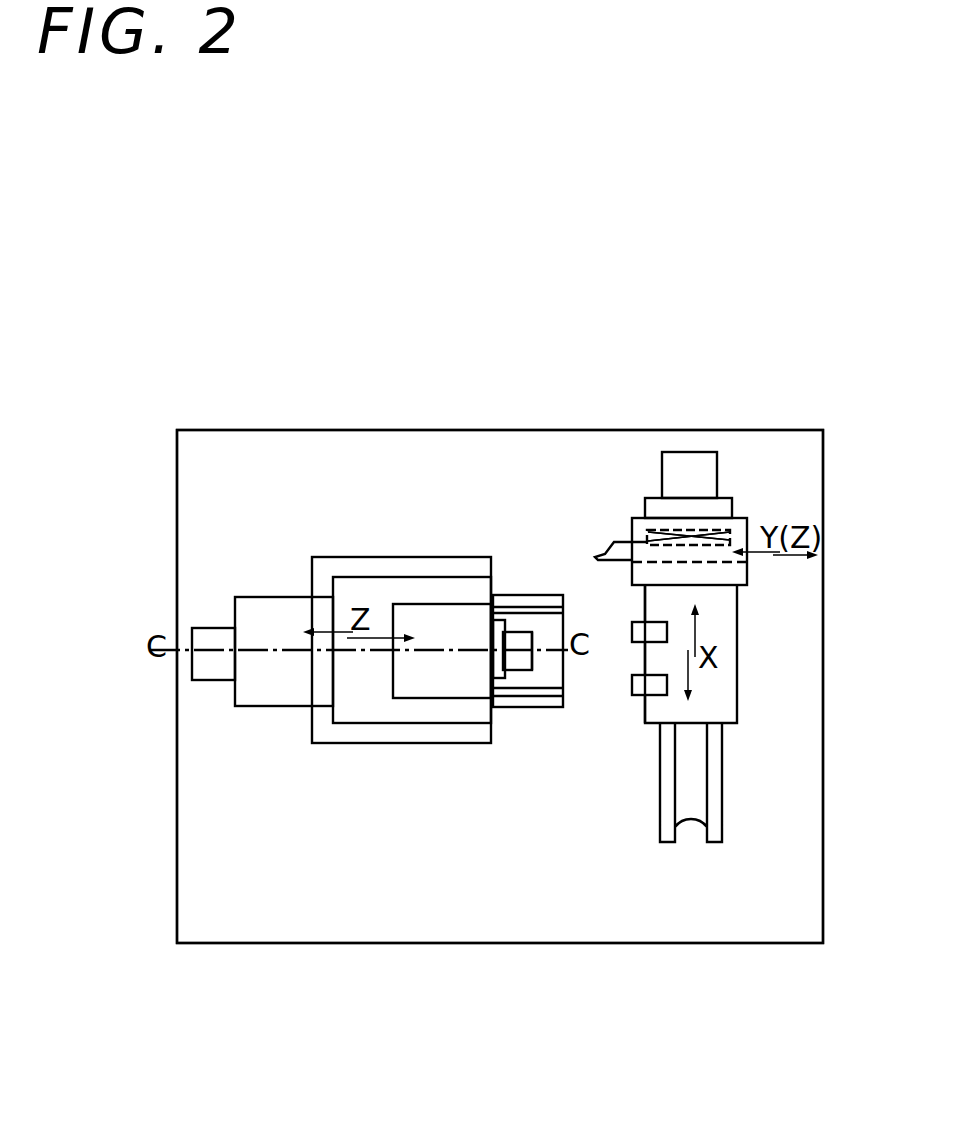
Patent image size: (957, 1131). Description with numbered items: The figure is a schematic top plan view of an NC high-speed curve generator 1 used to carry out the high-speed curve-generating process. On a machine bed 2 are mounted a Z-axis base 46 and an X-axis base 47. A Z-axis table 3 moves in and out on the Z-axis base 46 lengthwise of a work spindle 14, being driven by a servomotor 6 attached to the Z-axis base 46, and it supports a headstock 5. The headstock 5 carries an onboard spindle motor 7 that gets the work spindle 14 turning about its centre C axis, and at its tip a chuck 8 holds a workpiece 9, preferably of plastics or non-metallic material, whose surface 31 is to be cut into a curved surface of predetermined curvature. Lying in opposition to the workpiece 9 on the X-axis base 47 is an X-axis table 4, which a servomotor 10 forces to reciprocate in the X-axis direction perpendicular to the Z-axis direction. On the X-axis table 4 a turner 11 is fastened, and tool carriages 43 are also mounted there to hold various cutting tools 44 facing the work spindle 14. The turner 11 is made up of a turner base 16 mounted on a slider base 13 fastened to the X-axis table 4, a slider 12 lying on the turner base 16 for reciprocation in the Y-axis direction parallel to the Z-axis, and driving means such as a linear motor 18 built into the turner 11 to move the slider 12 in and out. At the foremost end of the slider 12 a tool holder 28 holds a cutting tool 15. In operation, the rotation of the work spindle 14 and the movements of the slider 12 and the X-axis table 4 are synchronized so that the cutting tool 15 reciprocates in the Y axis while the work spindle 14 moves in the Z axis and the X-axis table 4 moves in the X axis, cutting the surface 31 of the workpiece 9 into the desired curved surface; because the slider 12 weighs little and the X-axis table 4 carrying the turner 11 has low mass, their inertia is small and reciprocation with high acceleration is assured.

The high-speed curve generator 1 is at (356, 423).
The machine bed 2 is at (457, 478).
The Z-axis table 3 is at (402, 563).
The X-axis table 4 is at (720, 683).
The headstock 5 is at (362, 703).
The servomotor 6 is at (215, 670).
The spindle motor 7 is at (268, 610).
The chuck 8 is at (498, 628).
The workpiece 9 is at (517, 667).
The servomotor 10 is at (695, 463).
The turner 11 is at (736, 541).
The slider 12 is at (637, 515).
The slider base 13 is at (710, 582).
The work spindle 14 is at (491, 660).
The cutting tool 15 is at (596, 556).
The turner base 16 is at (733, 568).
The linear motor 18 is at (700, 532).
The tool holder 28 is at (621, 540).
The surface 31 is at (533, 657).
The tool carriages 43 is at (638, 637).
The cutting tools 44 is at (627, 619).
The Z-axis base 46 is at (538, 683).
The X-axis base 47 is at (713, 793).